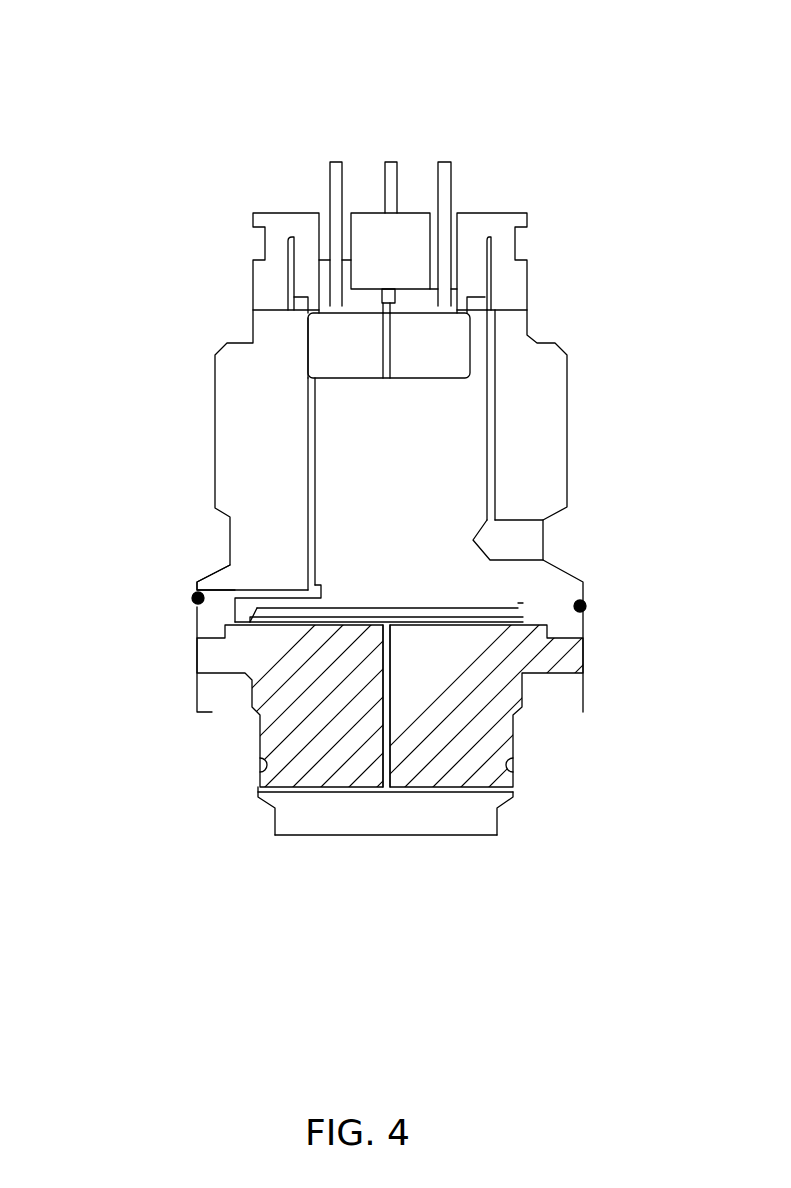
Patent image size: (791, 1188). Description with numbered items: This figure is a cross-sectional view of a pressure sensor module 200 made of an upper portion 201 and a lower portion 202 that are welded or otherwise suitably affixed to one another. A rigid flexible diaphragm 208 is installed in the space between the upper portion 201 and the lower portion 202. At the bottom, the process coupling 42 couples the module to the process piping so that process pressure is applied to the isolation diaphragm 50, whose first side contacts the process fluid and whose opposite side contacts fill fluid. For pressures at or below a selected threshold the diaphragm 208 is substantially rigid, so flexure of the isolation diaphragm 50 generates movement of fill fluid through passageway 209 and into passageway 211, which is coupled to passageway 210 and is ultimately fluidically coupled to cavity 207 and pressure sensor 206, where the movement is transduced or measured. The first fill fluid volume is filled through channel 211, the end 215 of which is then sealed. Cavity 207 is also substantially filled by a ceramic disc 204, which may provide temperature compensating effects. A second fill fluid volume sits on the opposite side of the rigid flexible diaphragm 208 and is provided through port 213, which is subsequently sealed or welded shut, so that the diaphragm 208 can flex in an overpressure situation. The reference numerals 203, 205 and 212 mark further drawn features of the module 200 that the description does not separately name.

The pressure sensor module 200 is at (610, 72).
The upper portion 201 is at (527, 372).
The lower portion 202 is at (500, 693).
The cavity 203 is at (495, 438).
The ceramic disc 204 is at (342, 344).
The connector block 205 is at (413, 261).
The pressure sensor 206 is at (383, 299).
The cavity 207 is at (308, 363).
The rigid flexible diaphragm 208 is at (490, 622).
The passageway 209 is at (385, 692).
The passageway 210 is at (308, 463).
The passageway 211 is at (245, 590).
The bottom face 212 is at (347, 823).
The port 213 is at (586, 604).
The end 215 is at (192, 597).
The process coupling 42 is at (537, 797).
The isolation diaphragm 50 is at (407, 792).